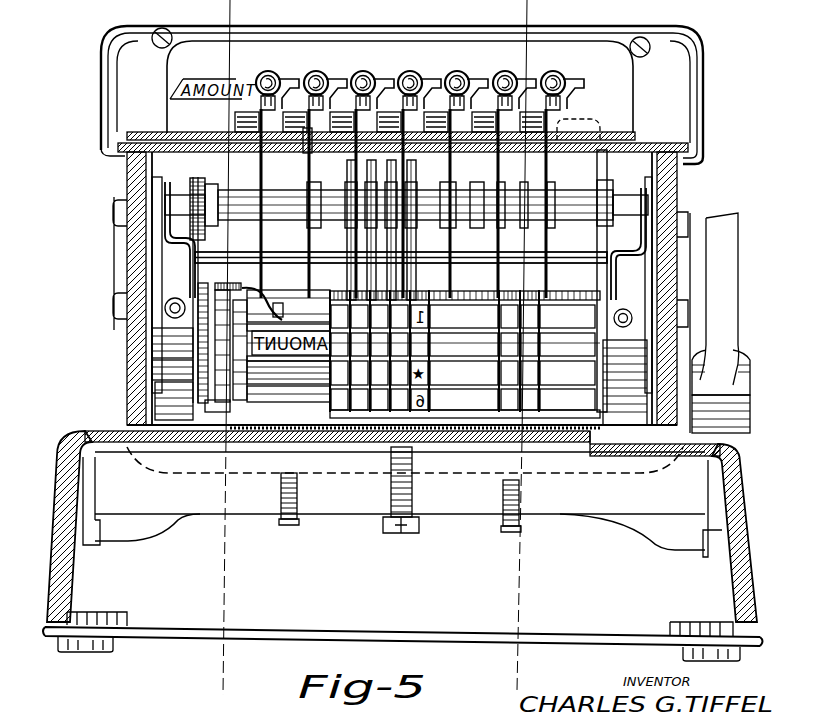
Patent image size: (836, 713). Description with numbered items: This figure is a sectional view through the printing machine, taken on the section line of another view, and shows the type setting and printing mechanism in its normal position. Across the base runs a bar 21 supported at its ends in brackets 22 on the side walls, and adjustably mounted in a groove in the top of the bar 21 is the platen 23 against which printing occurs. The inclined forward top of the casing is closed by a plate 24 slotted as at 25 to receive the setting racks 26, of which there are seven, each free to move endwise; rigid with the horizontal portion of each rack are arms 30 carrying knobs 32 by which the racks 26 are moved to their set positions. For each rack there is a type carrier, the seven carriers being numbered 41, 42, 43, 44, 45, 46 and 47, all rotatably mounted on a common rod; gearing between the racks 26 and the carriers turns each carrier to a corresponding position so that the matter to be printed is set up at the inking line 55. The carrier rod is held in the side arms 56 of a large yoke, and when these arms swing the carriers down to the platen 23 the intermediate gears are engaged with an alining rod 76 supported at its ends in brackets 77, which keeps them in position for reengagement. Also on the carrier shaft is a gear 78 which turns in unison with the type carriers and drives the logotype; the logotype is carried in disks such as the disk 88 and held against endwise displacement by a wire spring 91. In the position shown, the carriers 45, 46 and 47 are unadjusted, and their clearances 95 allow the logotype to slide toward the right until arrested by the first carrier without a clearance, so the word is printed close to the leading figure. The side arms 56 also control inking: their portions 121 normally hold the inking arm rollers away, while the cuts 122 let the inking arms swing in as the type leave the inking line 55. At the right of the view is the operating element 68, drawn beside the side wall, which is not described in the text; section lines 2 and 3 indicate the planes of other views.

The section line 2- 2 is at (520, 353).
The section line 3- 3 is at (226, 356).
The bar 21 is at (460, 503).
The brackets 22 is at (84, 538).
The platen 23 is at (583, 463).
The plate 24 is at (233, 142).
The slots 25 is at (307, 147).
The racks 26 is at (590, 118).
The arms 30 is at (557, 113).
The knobs 32 is at (565, 76).
The type carrier 41 is at (565, 412).
The type carrier 42 is at (520, 412).
The type carrier 43 is at (455, 412).
The type carrier 44 is at (396, 412).
The type carrier 45 is at (374, 412).
The type carrier 46 is at (356, 412).
The type carrier 47 is at (332, 404).
The inking line 55 is at (600, 343).
The side arms 56 is at (617, 405).
The operating lever 68 is at (725, 302).
The rod 76 is at (288, 252).
The brackets 77 is at (623, 250).
The gear 78 is at (212, 412).
The disk 88 is at (242, 398).
The wire spring 91 is at (232, 432).
The clearances 95 is at (330, 310).
The portions 121 is at (722, 403).
The cuts 122 is at (172, 357).